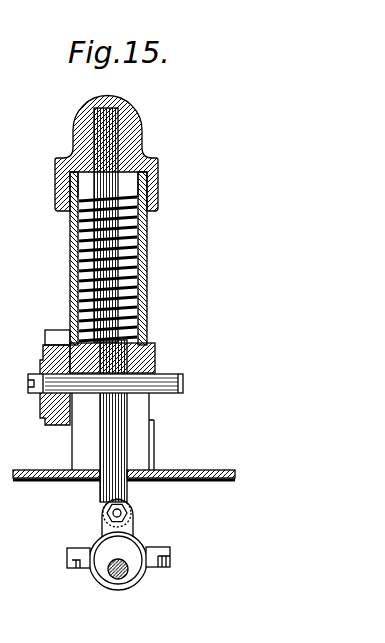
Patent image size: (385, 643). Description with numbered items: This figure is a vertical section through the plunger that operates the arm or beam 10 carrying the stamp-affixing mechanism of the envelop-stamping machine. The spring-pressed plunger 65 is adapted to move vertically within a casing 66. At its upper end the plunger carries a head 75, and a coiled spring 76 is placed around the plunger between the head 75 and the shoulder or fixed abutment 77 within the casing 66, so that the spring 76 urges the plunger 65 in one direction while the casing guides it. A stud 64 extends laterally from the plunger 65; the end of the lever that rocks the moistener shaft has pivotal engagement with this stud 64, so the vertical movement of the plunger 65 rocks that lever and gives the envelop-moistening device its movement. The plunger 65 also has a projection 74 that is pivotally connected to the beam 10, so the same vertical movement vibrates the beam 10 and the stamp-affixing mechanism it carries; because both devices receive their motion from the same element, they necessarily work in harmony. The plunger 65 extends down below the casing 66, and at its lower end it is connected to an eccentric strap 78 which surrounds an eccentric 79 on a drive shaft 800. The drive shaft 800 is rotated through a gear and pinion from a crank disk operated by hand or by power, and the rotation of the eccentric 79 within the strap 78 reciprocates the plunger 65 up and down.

The head 75 is at (68, 215).
The coiled spring 76 is at (72, 262).
The fixed abutment 77 is at (68, 338).
The casing 66 is at (151, 262).
The plunger 65 is at (152, 348).
The stud 64 is at (183, 376).
The beam 10 is at (44, 424).
The projection 74 is at (87, 398).
The eccentric 79 is at (130, 543).
The eccentric strap 78 is at (97, 583).
The drive shaft 800 is at (127, 578).